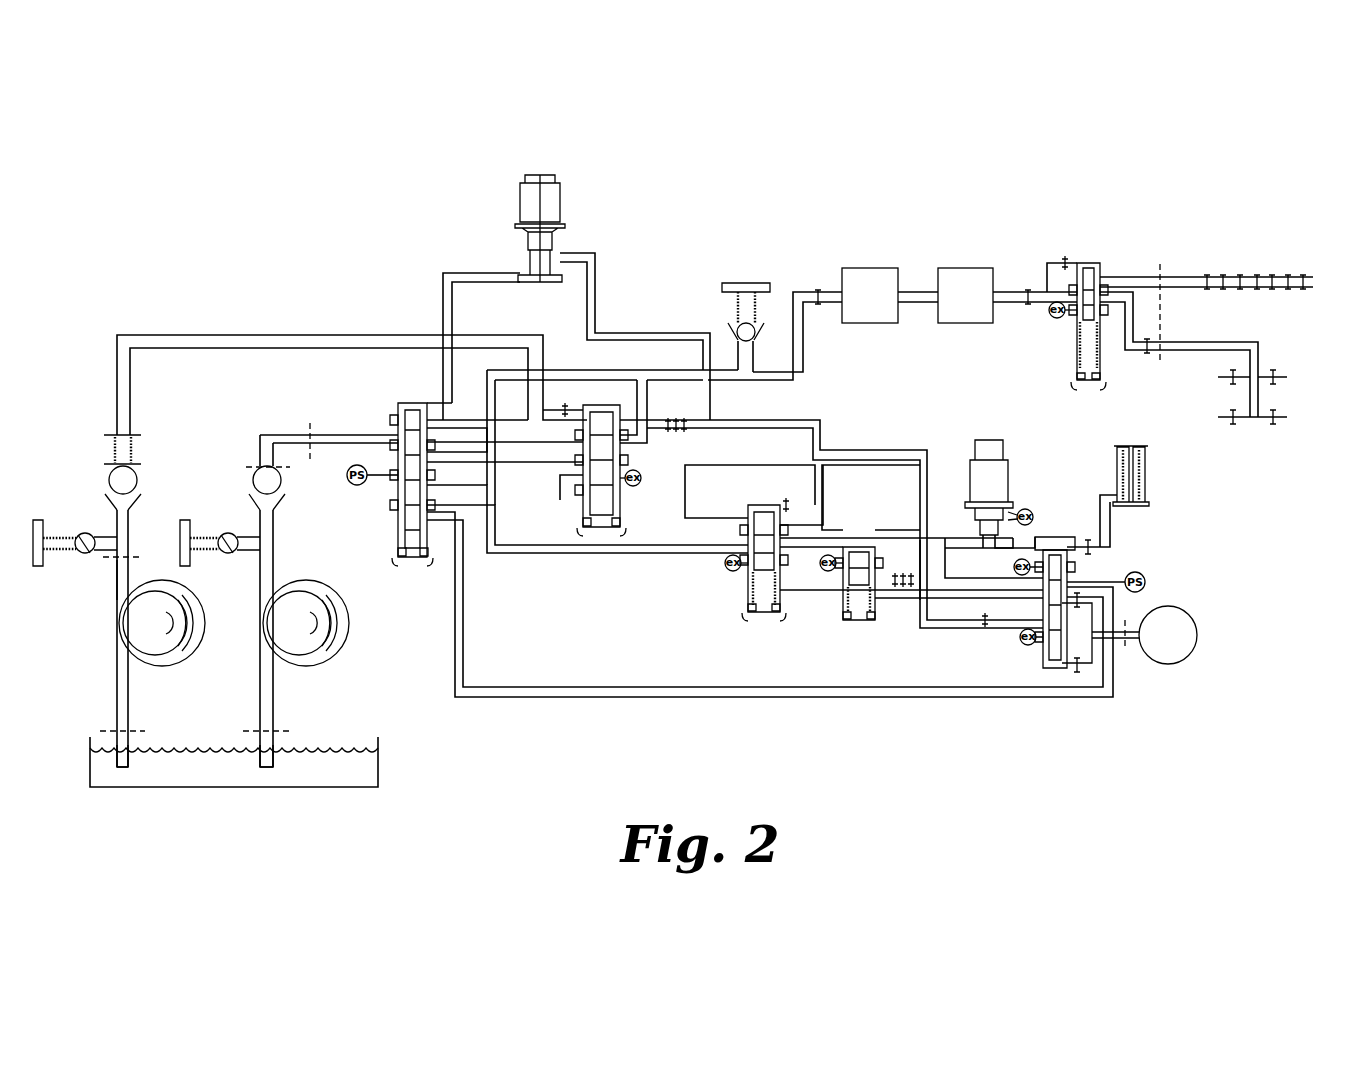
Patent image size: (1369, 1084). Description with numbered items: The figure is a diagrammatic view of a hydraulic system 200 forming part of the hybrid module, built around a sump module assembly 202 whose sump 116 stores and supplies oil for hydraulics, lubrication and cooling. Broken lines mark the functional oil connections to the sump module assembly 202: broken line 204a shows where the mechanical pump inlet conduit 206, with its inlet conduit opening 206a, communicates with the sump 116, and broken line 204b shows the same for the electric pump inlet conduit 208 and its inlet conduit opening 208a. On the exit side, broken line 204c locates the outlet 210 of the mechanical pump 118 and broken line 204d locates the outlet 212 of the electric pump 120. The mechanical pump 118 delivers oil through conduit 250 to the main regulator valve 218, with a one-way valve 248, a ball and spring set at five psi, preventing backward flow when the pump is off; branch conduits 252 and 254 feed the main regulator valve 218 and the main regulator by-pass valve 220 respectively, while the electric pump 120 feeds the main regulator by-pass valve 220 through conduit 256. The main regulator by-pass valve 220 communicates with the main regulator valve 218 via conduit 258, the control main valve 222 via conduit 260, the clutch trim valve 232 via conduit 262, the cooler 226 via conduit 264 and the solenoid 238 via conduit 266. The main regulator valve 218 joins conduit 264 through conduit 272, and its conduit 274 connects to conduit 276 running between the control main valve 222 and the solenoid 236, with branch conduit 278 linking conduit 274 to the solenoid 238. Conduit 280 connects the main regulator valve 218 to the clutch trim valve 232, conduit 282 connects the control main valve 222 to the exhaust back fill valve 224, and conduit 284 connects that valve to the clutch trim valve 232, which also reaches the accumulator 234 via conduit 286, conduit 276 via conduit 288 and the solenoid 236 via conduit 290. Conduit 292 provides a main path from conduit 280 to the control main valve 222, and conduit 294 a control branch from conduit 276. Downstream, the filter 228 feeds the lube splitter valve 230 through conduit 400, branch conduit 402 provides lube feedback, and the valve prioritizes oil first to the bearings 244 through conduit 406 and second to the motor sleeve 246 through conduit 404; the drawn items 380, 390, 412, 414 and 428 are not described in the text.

The sump 116 is at (313, 770).
The mechanical pump 118 is at (137, 625).
The electric pump 120 is at (292, 625).
The hydraulic system 200 is at (1225, 213).
The sump module assembly 202 is at (593, 733).
The broken line 204a is at (100, 733).
The broken line 204b is at (280, 733).
The broken line 204c is at (105, 560).
The broken line 204d is at (250, 460).
The mechanical pump inlet conduit 206 is at (115, 695).
The inlet conduit opening 206a is at (120, 770).
The electric pump inlet conduit 208 is at (273, 710).
The inlet conduit opening 208a is at (265, 770).
The outlet of mechanical pump 210 is at (157, 555).
The outlet of electric pump 212 is at (258, 564).
The main regulator valve 218 is at (623, 513).
The main regulator by-pass valve 220 is at (398, 522).
The control main valve 222 is at (745, 590).
The exhaust back fill valve 224 is at (846, 580).
The cooler 226 is at (867, 268).
The filter 228 is at (975, 268).
The lube splitter valve 230 is at (1075, 332).
The clutch trim valve 232 is at (1050, 668).
The accumulator 234 is at (1147, 490).
The solenoid 236 is at (1010, 490).
The solenoid 238 is at (562, 205).
The bearings 244 is at (1265, 447).
The motor sleeve 246 is at (1268, 275).
The one-way valve 248 is at (109, 476).
The conduit 250 is at (290, 334).
The branch conduit 252 is at (575, 400).
The branch conduit 254 is at (460, 418).
The conduit 256 is at (330, 432).
The conduit 258 is at (556, 485).
The conduit 260 is at (578, 556).
The conduit 262 is at (650, 698).
The conduit 264 is at (806, 345).
The conduit 266 is at (443, 295).
The conduit 272 is at (652, 398).
The conduit 274 is at (822, 436).
The conduit 276 is at (845, 530).
The branch conduit 278 is at (613, 330).
The conduit 280 is at (897, 453).
The conduit 282 is at (788, 600).
The conduit 284 is at (907, 602).
The conduit 286 is at (1115, 548).
The conduit 288 is at (947, 566).
The conduit 290 is at (1026, 546).
The conduit 292 is at (690, 492).
The conduit 294 is at (800, 505).
The mechanical pump inlet check valve 380 is at (78, 530).
The cooler popoff valve 390 is at (762, 300).
The conduit 400 is at (1013, 290).
The branch conduit 402 is at (1060, 260).
The conduit 404 is at (1130, 290).
The conduit 406 is at (1135, 305).
The input clutch 412 is at (1168, 666).
The pressure switch 414 is at (1146, 586).
The pressure switch 428 is at (348, 480).